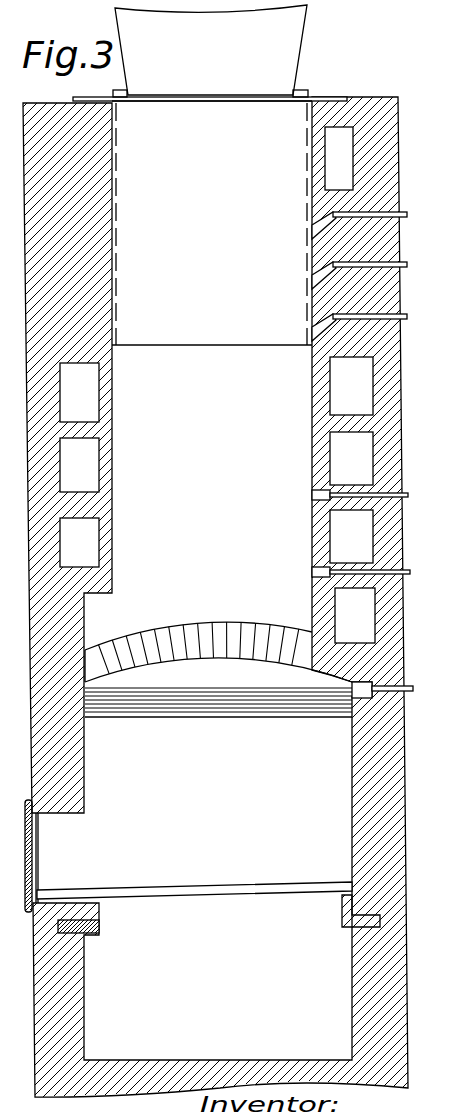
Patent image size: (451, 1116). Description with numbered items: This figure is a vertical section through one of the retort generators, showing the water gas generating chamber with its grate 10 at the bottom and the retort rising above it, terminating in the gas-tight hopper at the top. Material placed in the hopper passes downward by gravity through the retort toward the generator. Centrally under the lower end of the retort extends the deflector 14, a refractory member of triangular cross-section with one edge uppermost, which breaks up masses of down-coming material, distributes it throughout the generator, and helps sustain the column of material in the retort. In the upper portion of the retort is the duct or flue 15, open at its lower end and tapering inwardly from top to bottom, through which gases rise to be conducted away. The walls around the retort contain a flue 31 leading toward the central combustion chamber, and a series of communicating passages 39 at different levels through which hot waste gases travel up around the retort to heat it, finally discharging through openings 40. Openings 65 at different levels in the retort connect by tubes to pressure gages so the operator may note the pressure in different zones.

The grate 10 is at (205, 892).
The deflector 14 is at (220, 708).
The duct or flue 15 is at (229, 346).
The flue 31 is at (355, 615).
The communicating passages 39 is at (216, 462).
The openings 40 is at (337, 170).
The openings 65 is at (312, 237).